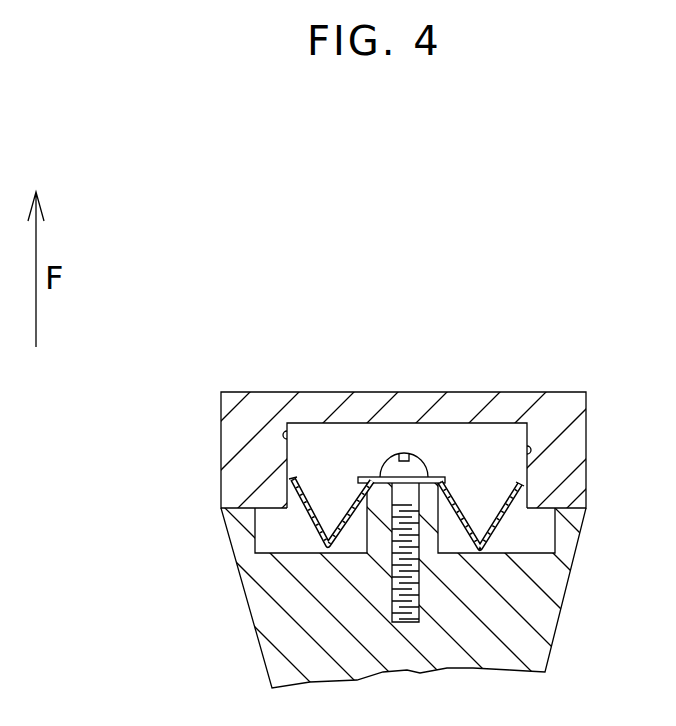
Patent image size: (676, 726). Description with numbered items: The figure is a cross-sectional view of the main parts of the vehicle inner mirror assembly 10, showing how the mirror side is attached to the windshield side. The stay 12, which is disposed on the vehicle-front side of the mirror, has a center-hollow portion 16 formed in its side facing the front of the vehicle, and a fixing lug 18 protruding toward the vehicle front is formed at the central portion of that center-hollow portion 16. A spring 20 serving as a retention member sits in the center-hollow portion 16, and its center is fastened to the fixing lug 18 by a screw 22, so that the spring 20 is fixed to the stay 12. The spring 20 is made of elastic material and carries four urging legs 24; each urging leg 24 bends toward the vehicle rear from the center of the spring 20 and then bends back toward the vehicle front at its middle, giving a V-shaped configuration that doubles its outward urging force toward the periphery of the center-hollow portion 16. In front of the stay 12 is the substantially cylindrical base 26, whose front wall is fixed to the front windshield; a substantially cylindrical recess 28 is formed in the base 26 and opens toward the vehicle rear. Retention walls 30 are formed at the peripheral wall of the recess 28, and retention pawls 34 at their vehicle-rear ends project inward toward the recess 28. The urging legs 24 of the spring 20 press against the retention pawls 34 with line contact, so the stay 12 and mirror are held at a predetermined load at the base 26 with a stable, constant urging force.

The vehicle inner mirror assembly 10 is at (404, 210).
The stay 12 is at (244, 604).
The center-hollow portion 16 is at (543, 533).
The fixing lug 18 is at (433, 477).
The spring 20 is at (376, 464).
The screw 22 is at (414, 454).
The urging legs 24 is at (348, 500).
The base 26 is at (470, 381).
The recess 28 is at (318, 430).
The retention walls 30 is at (287, 435).
The retention pawls 34 is at (287, 503).